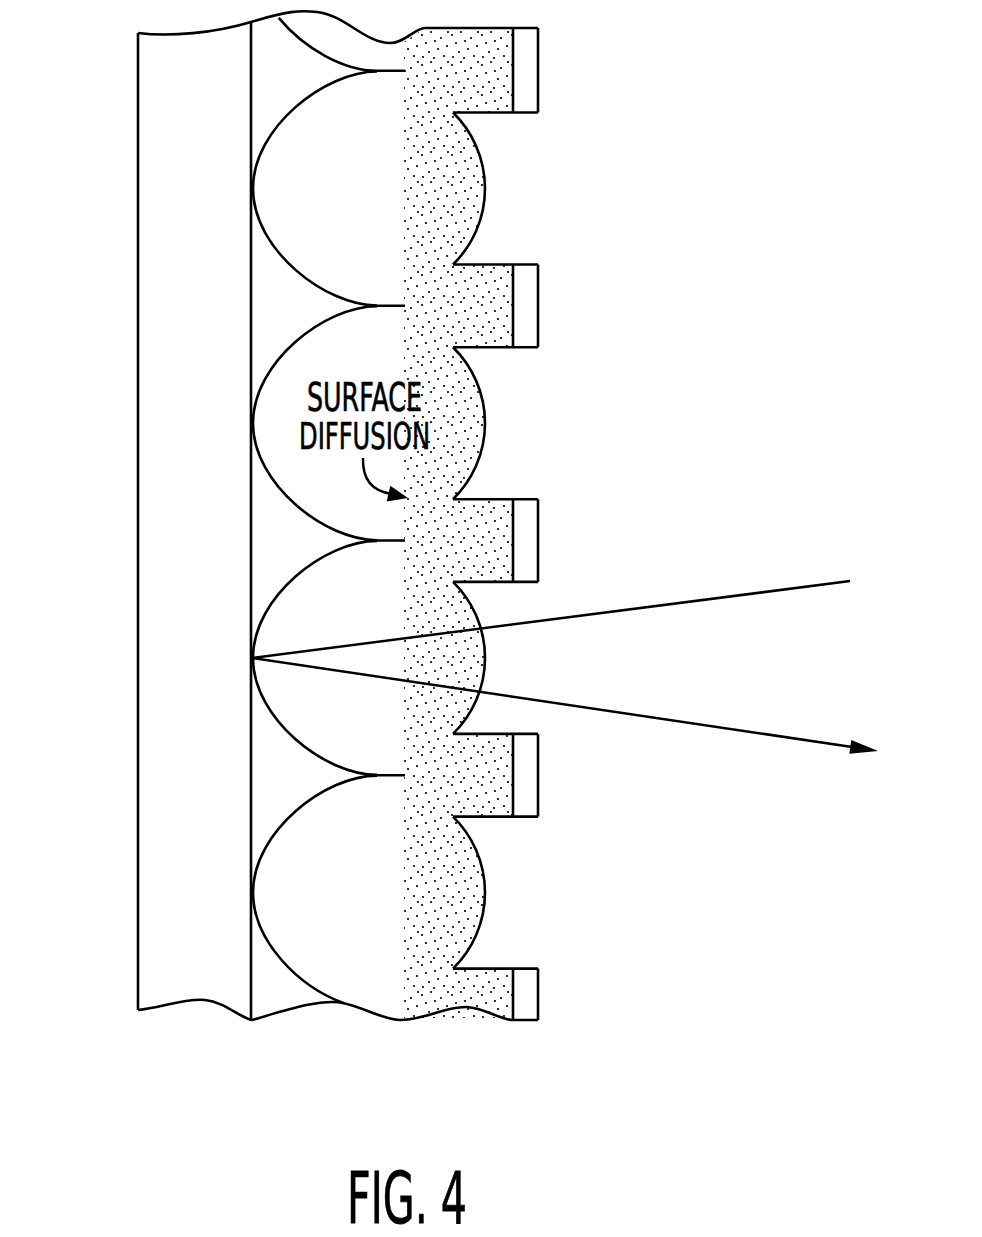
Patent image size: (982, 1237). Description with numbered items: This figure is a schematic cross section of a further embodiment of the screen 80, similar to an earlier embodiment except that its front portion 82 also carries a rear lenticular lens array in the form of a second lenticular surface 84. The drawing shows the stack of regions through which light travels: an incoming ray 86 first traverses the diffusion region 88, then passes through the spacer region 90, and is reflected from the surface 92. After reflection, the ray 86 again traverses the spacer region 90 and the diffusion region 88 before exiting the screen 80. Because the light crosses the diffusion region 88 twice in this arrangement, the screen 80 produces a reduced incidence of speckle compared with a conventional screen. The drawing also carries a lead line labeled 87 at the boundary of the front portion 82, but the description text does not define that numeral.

The screen 80 is at (71, 555).
The front portion 82 is at (537, 1047).
The second lenticular surface 84 is at (256, 1047).
The incoming ray 86 is at (838, 580).
The planar interface surface 87 is at (252, 818).
The diffusion region 88 is at (458, 423).
The spacer region 90 is at (297, 488).
The surface 92 is at (250, 304).